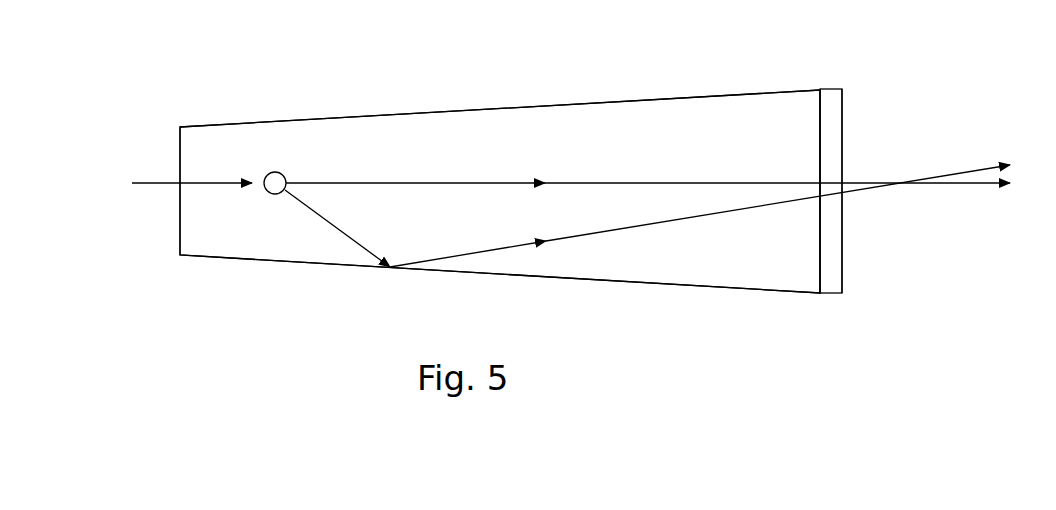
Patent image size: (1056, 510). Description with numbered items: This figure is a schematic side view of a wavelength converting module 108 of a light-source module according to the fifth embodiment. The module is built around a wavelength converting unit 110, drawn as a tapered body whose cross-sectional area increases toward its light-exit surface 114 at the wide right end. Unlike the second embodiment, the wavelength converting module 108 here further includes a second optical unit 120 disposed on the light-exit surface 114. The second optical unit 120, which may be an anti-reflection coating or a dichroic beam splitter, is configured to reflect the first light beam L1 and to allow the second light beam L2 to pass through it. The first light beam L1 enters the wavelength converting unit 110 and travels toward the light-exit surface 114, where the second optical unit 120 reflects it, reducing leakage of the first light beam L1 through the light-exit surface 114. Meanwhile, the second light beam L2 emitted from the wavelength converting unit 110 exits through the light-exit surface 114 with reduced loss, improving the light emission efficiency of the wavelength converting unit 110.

The wavelength converting module 108 is at (98, 59).
The wavelength converting unit 110 is at (248, 122).
The light-exit surface 114 is at (832, 116).
The second optical unit 120 is at (843, 153).
The first light beam L1 is at (150, 182).
The second light beam L2 is at (893, 187).